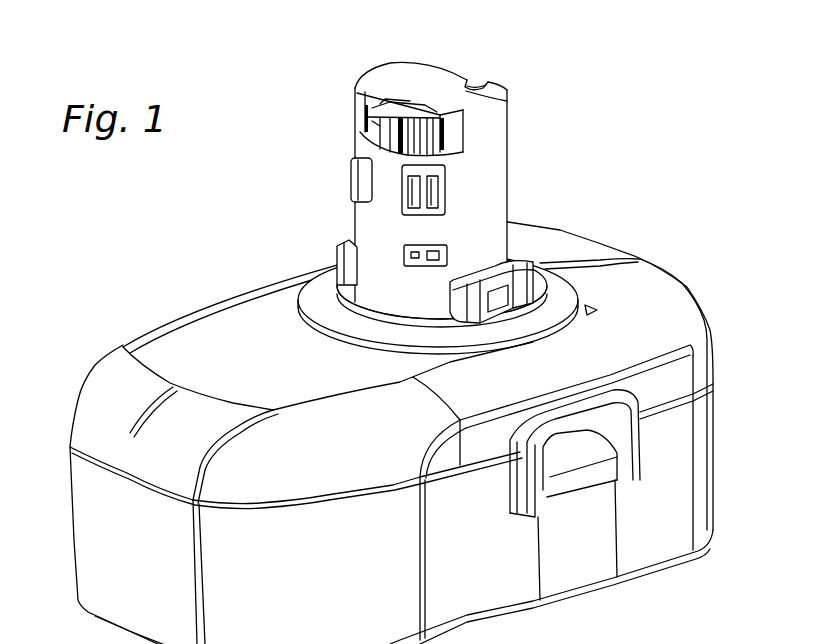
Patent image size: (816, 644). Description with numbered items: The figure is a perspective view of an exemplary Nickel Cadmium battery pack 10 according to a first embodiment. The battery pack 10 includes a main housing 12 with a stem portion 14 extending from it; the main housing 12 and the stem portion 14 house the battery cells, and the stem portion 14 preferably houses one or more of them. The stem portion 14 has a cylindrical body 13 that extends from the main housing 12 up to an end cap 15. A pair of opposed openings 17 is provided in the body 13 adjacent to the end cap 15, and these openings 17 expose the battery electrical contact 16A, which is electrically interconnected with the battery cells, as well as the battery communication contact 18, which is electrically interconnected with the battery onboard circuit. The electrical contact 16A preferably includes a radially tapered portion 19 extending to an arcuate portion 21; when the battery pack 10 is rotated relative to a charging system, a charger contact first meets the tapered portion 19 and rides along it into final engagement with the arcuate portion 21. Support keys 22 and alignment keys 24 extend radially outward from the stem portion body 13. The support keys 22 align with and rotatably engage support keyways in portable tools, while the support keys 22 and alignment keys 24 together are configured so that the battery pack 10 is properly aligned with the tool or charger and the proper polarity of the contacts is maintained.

The battery pack 10 is at (612, 120).
The main housing 12 is at (647, 270).
The cylindrical body 13 is at (504, 143).
The stem portion 14 is at (499, 195).
The end cap 15 is at (390, 77).
The battery electrical contact 16A is at (366, 110).
The openings 17 is at (441, 147).
The battery communication contact 18 is at (474, 89).
The radially tapered portion 19 is at (417, 128).
The arcuate portion 21 is at (368, 123).
The support keys 22 is at (444, 249).
The alignment keys 24 is at (352, 180).